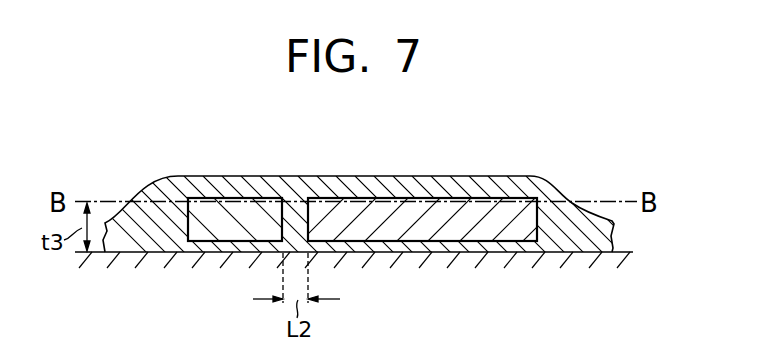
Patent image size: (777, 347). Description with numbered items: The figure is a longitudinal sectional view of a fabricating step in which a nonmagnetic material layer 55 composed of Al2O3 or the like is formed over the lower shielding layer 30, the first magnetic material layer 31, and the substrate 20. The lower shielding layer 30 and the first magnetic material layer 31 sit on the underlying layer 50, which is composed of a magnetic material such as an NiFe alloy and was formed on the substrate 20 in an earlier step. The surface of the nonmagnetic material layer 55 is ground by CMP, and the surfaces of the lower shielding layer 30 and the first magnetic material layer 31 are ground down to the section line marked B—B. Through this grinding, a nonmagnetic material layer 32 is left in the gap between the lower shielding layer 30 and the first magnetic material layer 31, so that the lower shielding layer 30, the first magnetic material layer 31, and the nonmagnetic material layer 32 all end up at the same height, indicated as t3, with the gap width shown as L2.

The substrate 20 is at (592, 257).
The lower shielding layer 30 is at (238, 212).
The first magnetic material layer 31 is at (393, 218).
The nonmagnetic material layer 32 is at (292, 228).
The underlying layer 50 is at (212, 244).
The nonmagnetic material layer 55 is at (470, 186).